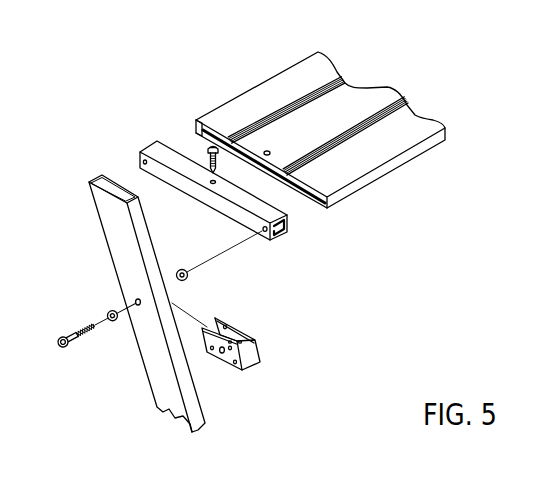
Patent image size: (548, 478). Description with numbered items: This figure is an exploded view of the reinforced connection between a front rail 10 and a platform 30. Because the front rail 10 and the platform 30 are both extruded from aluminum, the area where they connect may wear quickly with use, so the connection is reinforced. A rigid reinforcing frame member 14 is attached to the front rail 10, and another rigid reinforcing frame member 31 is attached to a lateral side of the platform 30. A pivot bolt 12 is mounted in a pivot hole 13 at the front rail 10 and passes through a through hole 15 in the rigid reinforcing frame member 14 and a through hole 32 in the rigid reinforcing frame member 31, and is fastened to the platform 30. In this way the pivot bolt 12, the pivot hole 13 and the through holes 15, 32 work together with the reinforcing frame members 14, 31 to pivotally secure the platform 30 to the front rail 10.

The front rail 10 is at (110, 235).
The pivot bolt 12 is at (73, 328).
The pivot hole 13 is at (140, 307).
The rigid reinforcing frame member 14 is at (252, 352).
The through hole 15 is at (222, 356).
The platform 30 is at (278, 82).
The rigid reinforcing frame member 31 is at (192, 174).
The through hole 32 is at (265, 233).